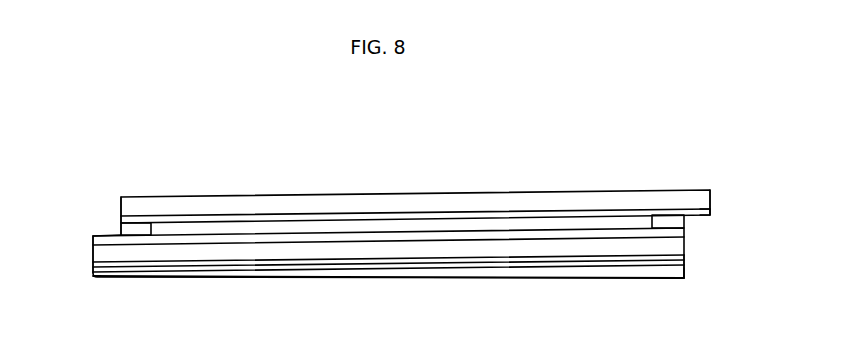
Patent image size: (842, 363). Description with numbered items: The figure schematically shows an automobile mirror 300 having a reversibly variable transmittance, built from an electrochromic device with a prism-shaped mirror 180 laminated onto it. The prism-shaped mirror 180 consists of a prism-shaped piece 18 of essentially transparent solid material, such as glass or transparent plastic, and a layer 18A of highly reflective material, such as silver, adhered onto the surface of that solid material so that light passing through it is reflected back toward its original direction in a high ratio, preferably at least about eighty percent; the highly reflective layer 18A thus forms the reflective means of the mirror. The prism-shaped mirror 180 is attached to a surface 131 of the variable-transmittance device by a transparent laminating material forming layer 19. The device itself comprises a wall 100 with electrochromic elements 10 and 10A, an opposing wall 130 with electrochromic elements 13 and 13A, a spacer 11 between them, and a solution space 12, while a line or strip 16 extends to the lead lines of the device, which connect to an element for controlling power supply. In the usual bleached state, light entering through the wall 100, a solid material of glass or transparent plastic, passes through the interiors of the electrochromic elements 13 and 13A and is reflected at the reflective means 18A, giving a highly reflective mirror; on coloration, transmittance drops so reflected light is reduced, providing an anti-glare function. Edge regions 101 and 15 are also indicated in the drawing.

The automobile mirror 300 is at (416, 195).
The electrochromic element 10 is at (715, 198).
The electrochromic element 10A is at (711, 209).
The upper substrate end face 101 is at (710, 190).
The wall 100 is at (113, 205).
The spacer 11 is at (116, 227).
The solution space 12 is at (183, 230).
The electrochromic element 13 is at (685, 250).
The electrochromic element 13A is at (685, 233).
The surface 131 is at (685, 253).
The wall 130 is at (92, 253).
The adhesive layer 15 is at (686, 221).
The line or strip 16 is at (108, 235).
The prism-shaped piece 18 is at (480, 279).
The highly reflective layer 18A is at (683, 281).
The prism-shaped mirror 180 is at (278, 278).
The transparent laminating material layer 19 is at (688, 257).